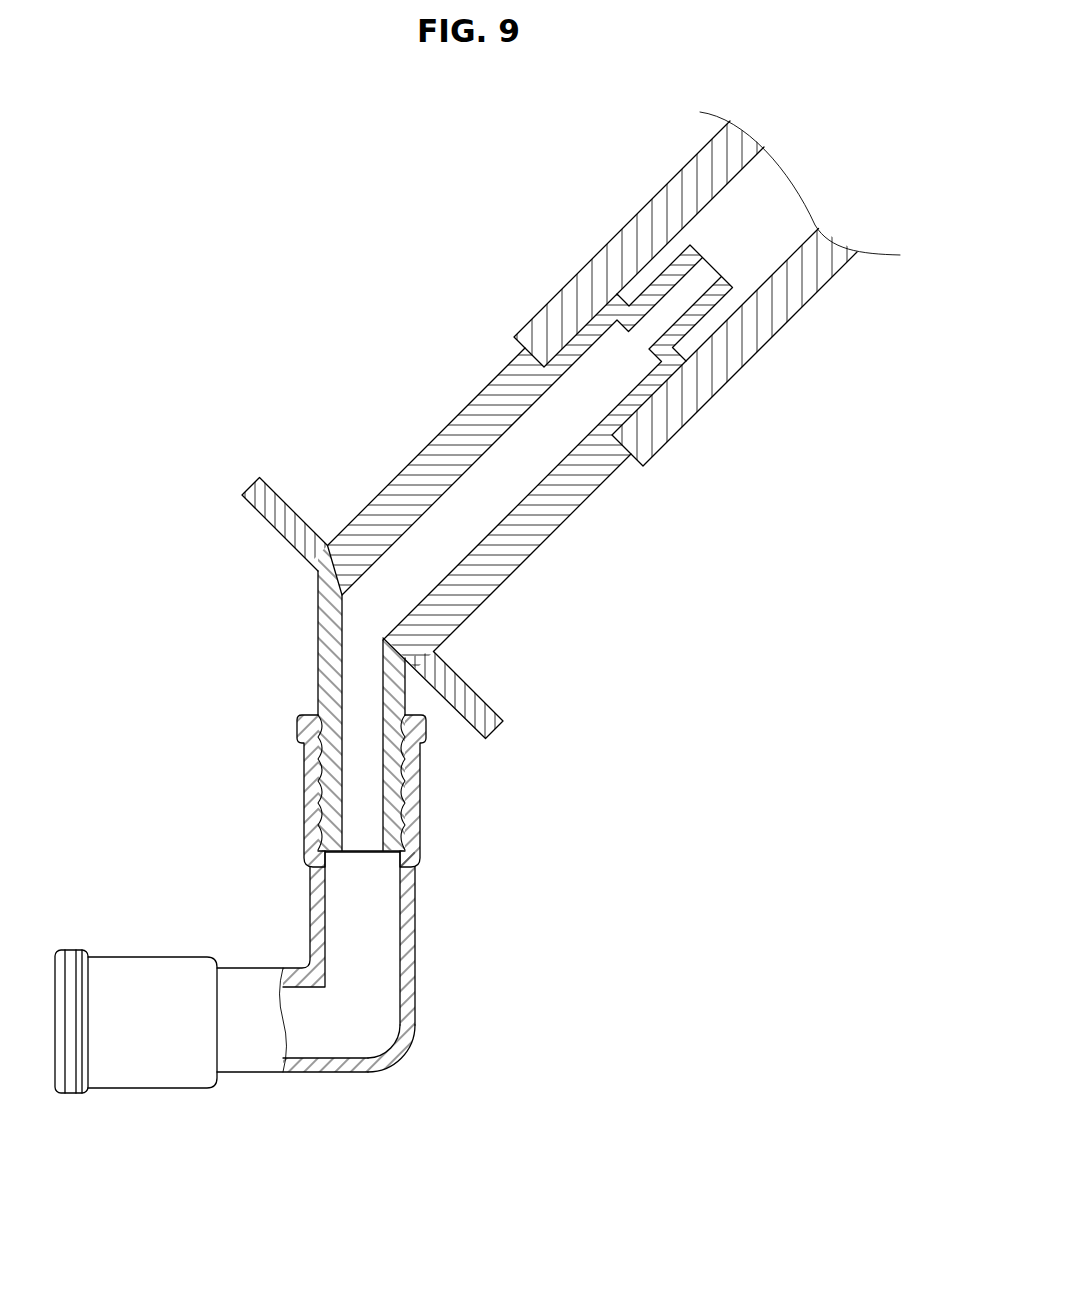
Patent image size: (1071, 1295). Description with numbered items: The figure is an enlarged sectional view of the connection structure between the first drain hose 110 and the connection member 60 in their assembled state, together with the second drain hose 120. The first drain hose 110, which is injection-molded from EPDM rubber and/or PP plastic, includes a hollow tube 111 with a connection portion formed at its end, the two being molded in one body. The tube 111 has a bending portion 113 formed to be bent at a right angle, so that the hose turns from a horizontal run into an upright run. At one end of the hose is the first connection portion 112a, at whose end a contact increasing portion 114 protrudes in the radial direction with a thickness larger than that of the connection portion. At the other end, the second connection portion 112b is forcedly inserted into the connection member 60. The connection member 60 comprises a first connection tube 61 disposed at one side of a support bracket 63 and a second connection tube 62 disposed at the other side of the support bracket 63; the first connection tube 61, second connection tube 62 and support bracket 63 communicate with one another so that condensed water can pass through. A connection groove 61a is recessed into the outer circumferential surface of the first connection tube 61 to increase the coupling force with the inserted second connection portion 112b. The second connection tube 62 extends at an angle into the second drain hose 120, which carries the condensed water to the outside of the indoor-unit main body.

The connection member 60 is at (236, 429).
The first connection tube 61 is at (323, 625).
The connection groove 61a is at (397, 806).
The second connection tube 62 is at (478, 407).
The support bracket 63 is at (273, 498).
The first drain hose 110 is at (252, 841).
The tube 111 is at (412, 928).
The first connection portion 112a is at (130, 960).
The second connection portion 112b is at (307, 758).
The bending portion 113 is at (404, 1052).
The contact increasing portion 114 is at (70, 952).
The second drain hose 120 is at (640, 209).